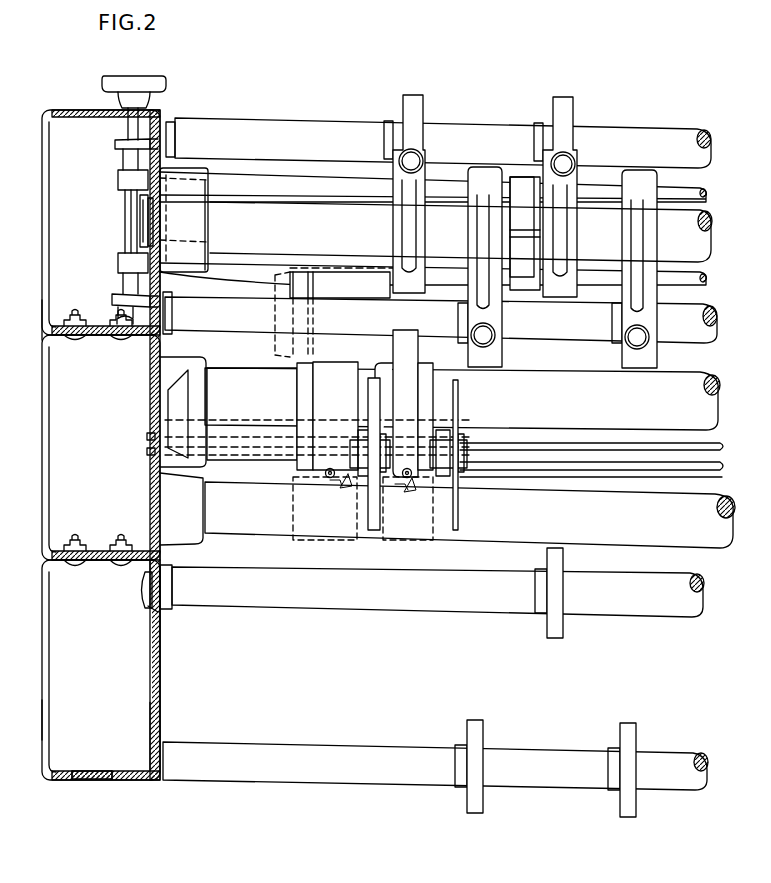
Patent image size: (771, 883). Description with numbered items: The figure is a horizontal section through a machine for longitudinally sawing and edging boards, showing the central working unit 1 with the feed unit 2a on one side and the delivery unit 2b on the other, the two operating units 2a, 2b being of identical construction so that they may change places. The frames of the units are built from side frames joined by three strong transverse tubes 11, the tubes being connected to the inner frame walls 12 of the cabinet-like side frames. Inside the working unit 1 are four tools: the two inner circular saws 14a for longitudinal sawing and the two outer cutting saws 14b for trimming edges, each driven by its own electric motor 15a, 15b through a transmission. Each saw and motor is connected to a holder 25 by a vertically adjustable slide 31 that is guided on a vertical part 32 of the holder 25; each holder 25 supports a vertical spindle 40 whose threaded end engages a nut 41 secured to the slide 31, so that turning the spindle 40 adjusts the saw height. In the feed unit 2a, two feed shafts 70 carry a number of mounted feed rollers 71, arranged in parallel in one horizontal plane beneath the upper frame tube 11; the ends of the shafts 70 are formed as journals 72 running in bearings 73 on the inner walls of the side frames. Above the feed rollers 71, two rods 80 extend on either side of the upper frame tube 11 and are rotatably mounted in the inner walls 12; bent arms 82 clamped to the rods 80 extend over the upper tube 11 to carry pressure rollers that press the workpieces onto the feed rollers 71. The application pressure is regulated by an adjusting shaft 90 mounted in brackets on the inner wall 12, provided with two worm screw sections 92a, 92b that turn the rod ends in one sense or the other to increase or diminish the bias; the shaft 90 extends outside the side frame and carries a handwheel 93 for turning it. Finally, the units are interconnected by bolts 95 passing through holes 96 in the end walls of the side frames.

The working unit 1 is at (48, 420).
The feed unit 2a is at (42, 286).
The delivery unit 2b is at (40, 700).
The transverse tubes 11 is at (674, 258).
The inner frame wall 12 is at (156, 380).
The circular saw 14a is at (458, 522).
The cutting saw 14b is at (372, 528).
The electric motor 15a is at (286, 276).
The electric motor 15b is at (236, 382).
The holder 25 is at (306, 538).
The vertically adjustable slide 31 is at (428, 478).
The vertical part of the holder 32 is at (328, 498).
The vertical spindle 40 is at (326, 486).
The nut 41 is at (322, 478).
The feed shaft 70 is at (262, 128).
The feed roller 71 is at (416, 104).
The journal 72 is at (166, 585).
The bearing 73 is at (160, 614).
The rod 80 is at (302, 182).
The bent arm 82 is at (632, 172).
The shaft 90 is at (142, 118).
The worm screw section 92a is at (124, 214).
The worm screw section 92b is at (124, 242).
The handwheel 93 is at (155, 84).
The bolt 95 is at (108, 574).
The hole 96 is at (104, 776).